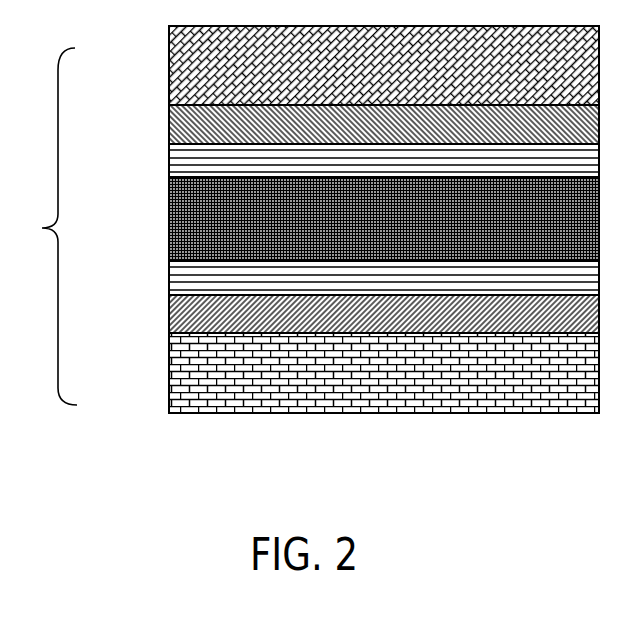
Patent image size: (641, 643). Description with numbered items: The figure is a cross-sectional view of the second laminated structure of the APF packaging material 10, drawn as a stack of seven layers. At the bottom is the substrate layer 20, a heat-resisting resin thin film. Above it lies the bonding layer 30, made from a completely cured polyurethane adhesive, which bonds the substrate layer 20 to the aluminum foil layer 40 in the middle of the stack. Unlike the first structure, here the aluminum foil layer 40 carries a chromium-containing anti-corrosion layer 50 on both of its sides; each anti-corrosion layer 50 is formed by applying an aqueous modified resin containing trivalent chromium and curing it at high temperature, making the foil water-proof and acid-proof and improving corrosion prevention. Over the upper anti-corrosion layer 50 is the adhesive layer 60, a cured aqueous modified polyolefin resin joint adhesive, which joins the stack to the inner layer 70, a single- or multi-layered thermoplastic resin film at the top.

The APF packaging material 10 is at (42, 226).
The substrate layer 20 is at (169, 380).
The bonding layer 30 is at (169, 316).
The aluminum foil layer 40 is at (169, 221).
The chromium-containing anti-corrosion layer 50 is at (169, 165).
The adhesive layer 60 is at (169, 128).
The inner layer 70 is at (169, 71).